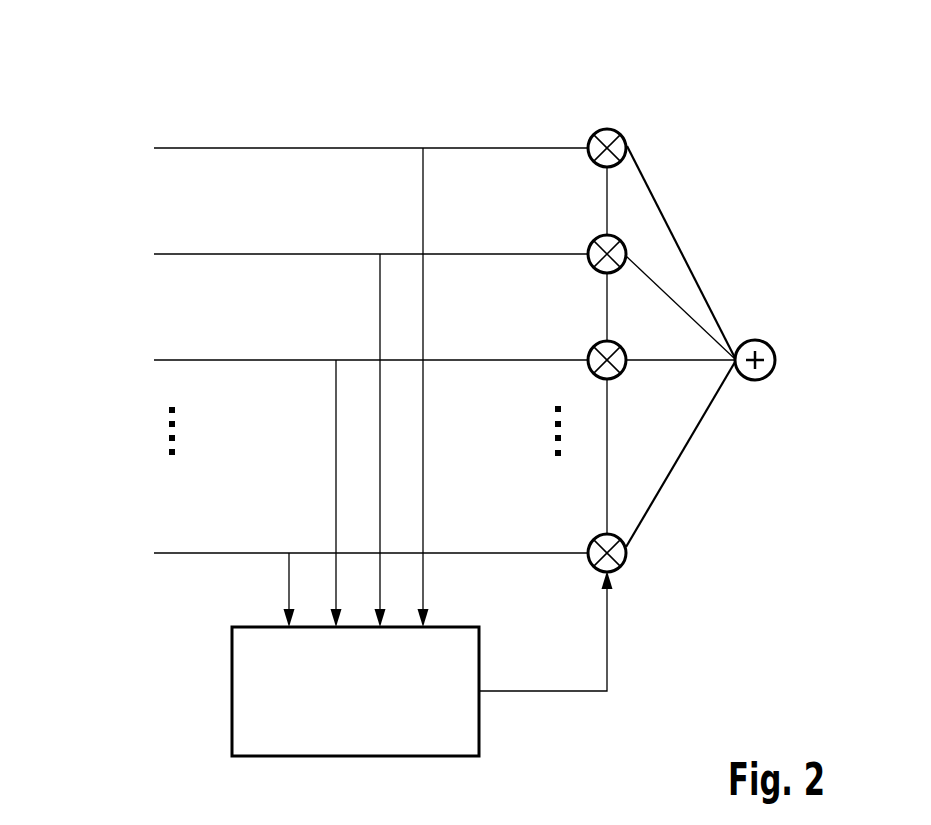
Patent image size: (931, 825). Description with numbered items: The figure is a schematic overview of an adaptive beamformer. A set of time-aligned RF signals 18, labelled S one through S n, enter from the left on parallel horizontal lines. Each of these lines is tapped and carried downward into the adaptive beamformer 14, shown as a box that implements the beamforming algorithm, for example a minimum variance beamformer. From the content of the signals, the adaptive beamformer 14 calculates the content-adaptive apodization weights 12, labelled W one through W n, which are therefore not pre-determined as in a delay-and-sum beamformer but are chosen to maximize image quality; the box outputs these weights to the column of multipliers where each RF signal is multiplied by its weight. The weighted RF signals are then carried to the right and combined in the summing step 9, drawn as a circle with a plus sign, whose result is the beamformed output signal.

The content-adaptive apodization weights 12 is at (518, 82).
The summing step 9 is at (758, 312).
The time-aligned RF signals 18 is at (125, 560).
The adaptive beamformer 14 is at (232, 697).